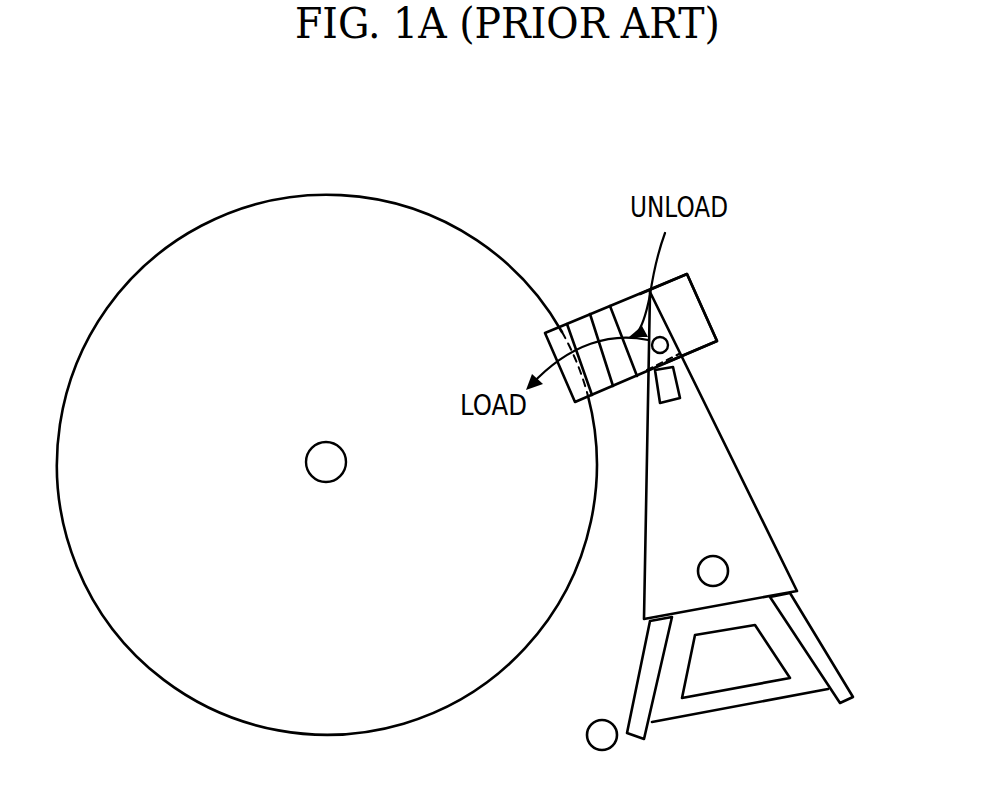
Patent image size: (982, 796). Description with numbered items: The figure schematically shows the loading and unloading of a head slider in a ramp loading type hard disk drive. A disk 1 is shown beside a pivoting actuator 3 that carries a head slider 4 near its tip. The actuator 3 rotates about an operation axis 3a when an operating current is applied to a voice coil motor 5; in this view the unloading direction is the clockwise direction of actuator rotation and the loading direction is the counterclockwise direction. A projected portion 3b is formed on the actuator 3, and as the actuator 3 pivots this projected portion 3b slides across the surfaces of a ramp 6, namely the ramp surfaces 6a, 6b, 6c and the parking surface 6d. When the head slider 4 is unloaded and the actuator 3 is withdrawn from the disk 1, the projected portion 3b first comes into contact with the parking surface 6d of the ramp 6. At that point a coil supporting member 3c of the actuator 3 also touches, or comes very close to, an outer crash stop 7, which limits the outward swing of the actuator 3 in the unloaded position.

The disk 1 is at (326, 192).
The actuator 3 is at (737, 495).
The operation axis 3a is at (728, 568).
The projected portion 3b is at (668, 347).
The coil supporting member 3c is at (653, 650).
The head slider 4 is at (673, 392).
The voice coil motor 5 is at (730, 705).
The ramp 6 is at (710, 291).
The ramp surface 6a is at (700, 318).
The ramp surface 6b is at (610, 317).
The ramp surface 6c is at (580, 332).
The parking surface 6d is at (560, 328).
The outer crash stop 7 is at (587, 733).